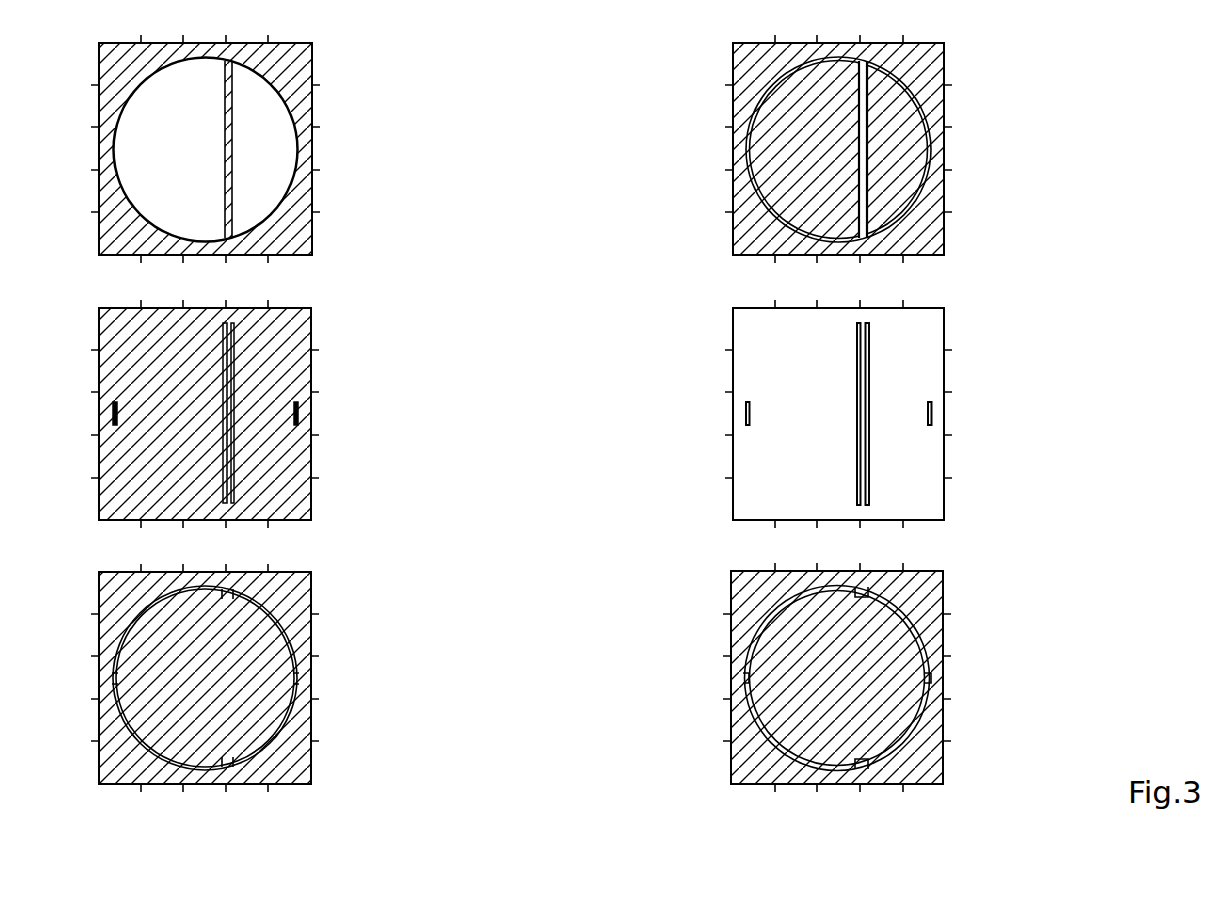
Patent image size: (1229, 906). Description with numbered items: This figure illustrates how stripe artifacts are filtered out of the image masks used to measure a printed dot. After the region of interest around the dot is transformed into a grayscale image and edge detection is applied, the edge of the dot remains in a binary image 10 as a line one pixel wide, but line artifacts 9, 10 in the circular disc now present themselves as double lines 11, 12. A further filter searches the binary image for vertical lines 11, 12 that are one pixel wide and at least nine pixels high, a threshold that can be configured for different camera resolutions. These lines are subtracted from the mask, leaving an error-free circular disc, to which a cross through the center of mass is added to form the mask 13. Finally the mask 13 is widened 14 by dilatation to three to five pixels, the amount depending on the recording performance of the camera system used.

The line artifact 9 is at (230, 117).
The binary image 10 is at (865, 103).
The double line 11 is at (232, 367).
The vertical line 12 is at (868, 376).
The mask 13 is at (283, 617).
The widened mask 14 is at (917, 630).